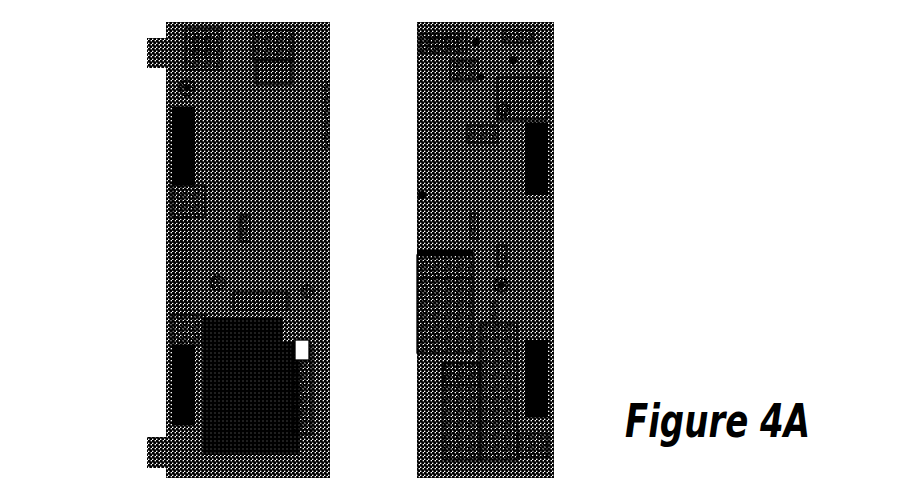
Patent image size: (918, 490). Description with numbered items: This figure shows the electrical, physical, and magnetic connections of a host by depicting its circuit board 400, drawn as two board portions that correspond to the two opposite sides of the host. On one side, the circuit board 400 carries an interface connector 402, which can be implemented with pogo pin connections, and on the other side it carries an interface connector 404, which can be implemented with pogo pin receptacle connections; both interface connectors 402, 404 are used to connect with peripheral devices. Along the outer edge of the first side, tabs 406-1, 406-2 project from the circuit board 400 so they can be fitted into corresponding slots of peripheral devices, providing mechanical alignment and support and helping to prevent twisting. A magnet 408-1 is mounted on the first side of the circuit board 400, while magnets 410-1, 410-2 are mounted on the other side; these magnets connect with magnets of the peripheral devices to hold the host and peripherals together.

The circuit board 400 is at (660, 88).
The interface connector 402 is at (167, 262).
The interface connector 404 is at (553, 258).
The tab 406-1 is at (147, 55).
The tab 406-2 is at (147, 447).
The magnet 408-1 is at (168, 162).
The magnet 410-1 is at (553, 156).
The magnet 410-2 is at (553, 368).